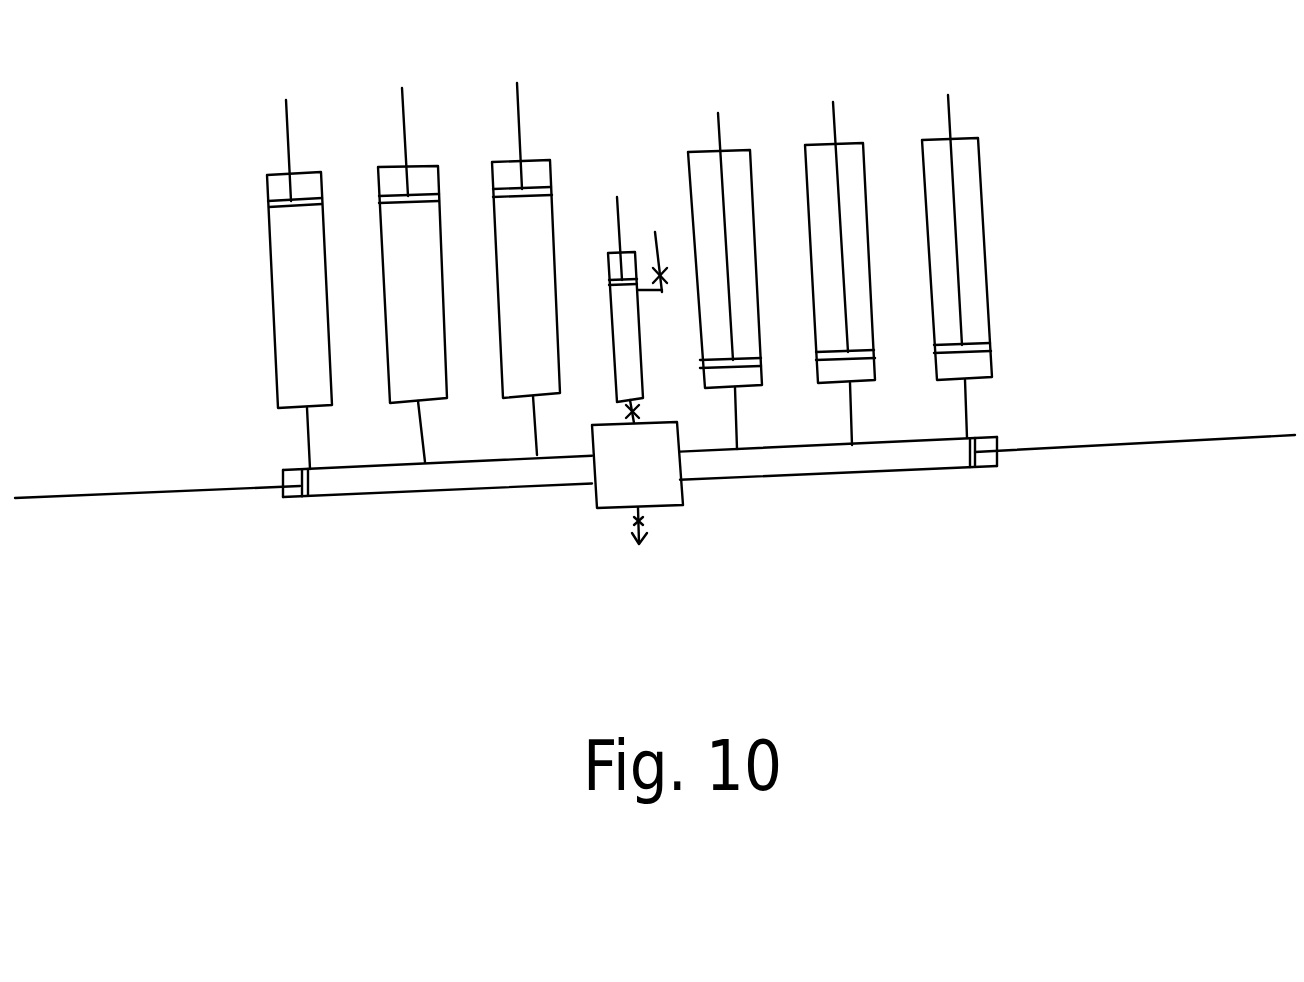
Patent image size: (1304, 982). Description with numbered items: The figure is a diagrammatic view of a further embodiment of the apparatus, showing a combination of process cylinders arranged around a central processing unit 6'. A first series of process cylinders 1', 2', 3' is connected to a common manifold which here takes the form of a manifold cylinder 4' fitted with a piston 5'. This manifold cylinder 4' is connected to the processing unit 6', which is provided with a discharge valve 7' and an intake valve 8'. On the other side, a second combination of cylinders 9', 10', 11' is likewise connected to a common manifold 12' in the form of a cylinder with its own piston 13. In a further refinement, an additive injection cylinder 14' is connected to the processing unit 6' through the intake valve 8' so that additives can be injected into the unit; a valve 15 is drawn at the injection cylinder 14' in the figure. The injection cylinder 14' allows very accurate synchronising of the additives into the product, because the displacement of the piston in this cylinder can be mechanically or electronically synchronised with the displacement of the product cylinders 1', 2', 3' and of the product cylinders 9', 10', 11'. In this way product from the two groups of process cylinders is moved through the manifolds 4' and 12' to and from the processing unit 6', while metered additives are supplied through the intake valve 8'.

The process cylinder 1' is at (273, 284).
The process cylinder 2' is at (395, 275).
The process cylinder 3' is at (508, 269).
The manifold cylinder 4' is at (437, 533).
The piston 5' is at (157, 550).
The processing unit 6' is at (605, 516).
The discharge valve 7' is at (703, 562).
The intake valve 8' is at (722, 481).
The cylinder 9' is at (748, 281).
The cylinder 10' is at (866, 273).
The cylinder 11' is at (994, 266).
The common manifold 12' is at (838, 505).
The piston 13 is at (1098, 450).
The additive injection cylinder 14' is at (648, 299).
The valve 15 is at (660, 270).